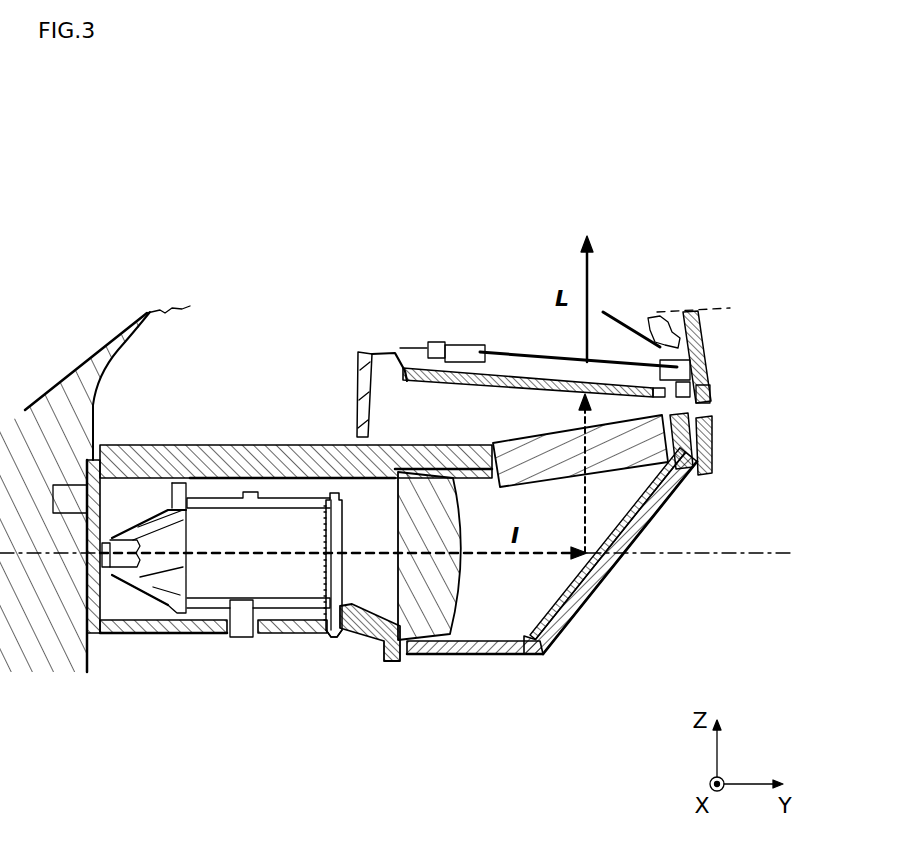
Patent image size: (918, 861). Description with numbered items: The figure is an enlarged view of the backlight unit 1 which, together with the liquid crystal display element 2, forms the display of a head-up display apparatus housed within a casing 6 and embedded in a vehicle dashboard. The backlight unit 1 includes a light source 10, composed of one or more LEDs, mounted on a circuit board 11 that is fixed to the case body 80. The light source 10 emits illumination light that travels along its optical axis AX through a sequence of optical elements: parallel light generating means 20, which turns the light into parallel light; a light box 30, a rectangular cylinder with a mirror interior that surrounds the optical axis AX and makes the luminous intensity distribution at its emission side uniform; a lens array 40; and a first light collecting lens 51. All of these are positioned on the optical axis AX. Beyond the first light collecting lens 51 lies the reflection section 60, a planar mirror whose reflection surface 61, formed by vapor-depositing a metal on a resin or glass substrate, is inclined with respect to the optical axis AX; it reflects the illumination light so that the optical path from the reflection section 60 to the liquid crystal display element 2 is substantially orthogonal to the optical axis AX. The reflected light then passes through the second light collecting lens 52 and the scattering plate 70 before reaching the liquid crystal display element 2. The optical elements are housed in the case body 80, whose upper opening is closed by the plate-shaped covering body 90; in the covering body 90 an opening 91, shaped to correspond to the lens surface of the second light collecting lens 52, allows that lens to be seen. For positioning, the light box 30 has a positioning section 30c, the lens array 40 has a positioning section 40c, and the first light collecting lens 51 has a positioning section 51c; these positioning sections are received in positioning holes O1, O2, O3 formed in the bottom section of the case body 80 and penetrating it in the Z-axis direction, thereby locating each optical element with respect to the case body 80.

The backlight unit 1 is at (608, 688).
The liquid crystal display element 2 is at (518, 352).
The casing 6 is at (68, 375).
The light source 10 is at (104, 570).
The circuit board 11 is at (97, 634).
The parallel light generating means 20 is at (162, 592).
The light box 30 is at (216, 608).
The positioning section 30c is at (237, 636).
The lens array 40 is at (320, 512).
The positioning section 40c is at (330, 637).
The first light collecting lens 51 is at (392, 633).
The positioning section 51c is at (402, 662).
The second light collecting lens 52 is at (613, 422).
The reflection section 60 is at (558, 643).
The reflection surface 61 is at (508, 655).
The scattering plate 70 is at (545, 391).
The case body 80 is at (623, 565).
The covering body 90 is at (330, 455).
The opening 91 is at (665, 413).
The positioning hole O1 is at (248, 637).
The positioning hole O2 is at (336, 637).
The positioning hole O3 is at (405, 660).
The optical axis AX is at (774, 549).